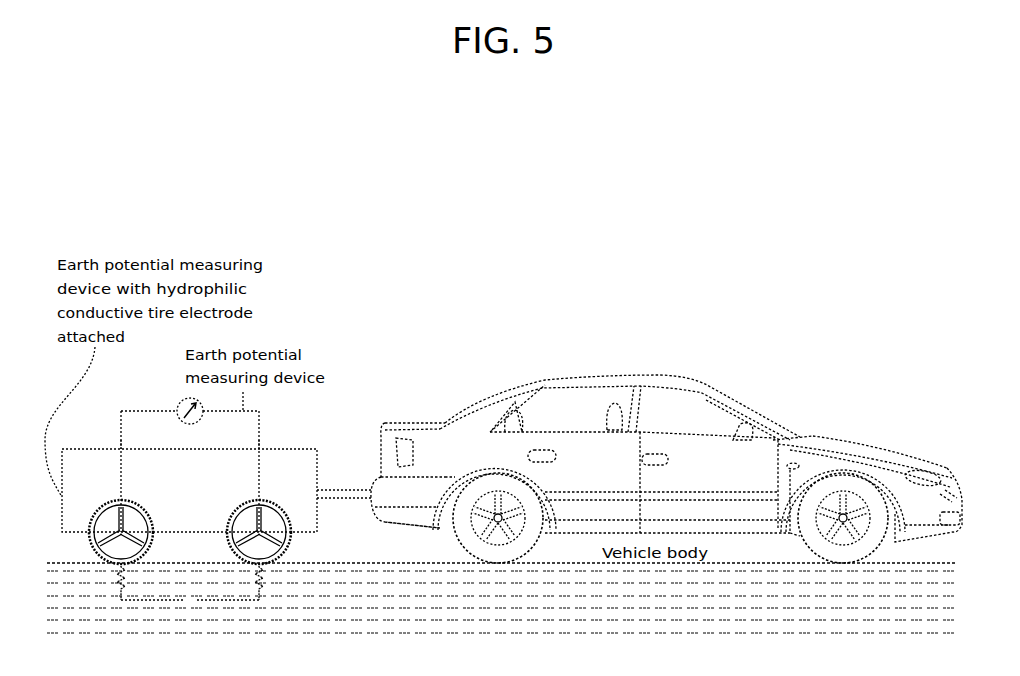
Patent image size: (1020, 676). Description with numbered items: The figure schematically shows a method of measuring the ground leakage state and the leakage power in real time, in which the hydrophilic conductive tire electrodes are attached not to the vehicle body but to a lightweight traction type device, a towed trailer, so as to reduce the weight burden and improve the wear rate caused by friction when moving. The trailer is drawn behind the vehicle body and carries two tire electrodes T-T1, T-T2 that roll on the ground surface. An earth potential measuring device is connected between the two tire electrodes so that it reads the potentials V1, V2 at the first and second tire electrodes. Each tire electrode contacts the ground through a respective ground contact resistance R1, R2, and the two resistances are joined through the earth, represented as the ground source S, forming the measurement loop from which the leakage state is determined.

The first voltage measurement point V1 is at (112, 440).
The second voltage measurement point V2 is at (251, 440).
The first hydrophilic conductive tire electrode T-T1 is at (109, 532).
The second hydrophilic conductive tire electrode T-T2 is at (247, 532).
The first ground contact resistance R1 is at (131, 581).
The second ground contact resistance R2 is at (269, 581).
The earth potential signal source S is at (190, 601).